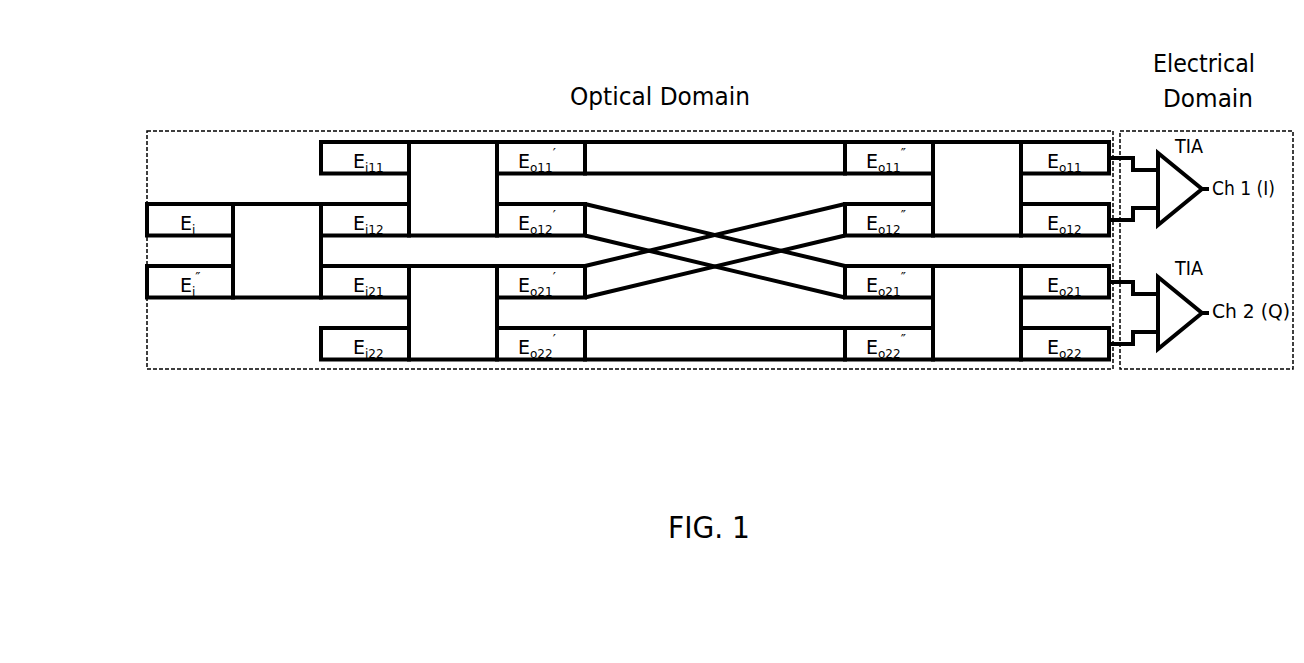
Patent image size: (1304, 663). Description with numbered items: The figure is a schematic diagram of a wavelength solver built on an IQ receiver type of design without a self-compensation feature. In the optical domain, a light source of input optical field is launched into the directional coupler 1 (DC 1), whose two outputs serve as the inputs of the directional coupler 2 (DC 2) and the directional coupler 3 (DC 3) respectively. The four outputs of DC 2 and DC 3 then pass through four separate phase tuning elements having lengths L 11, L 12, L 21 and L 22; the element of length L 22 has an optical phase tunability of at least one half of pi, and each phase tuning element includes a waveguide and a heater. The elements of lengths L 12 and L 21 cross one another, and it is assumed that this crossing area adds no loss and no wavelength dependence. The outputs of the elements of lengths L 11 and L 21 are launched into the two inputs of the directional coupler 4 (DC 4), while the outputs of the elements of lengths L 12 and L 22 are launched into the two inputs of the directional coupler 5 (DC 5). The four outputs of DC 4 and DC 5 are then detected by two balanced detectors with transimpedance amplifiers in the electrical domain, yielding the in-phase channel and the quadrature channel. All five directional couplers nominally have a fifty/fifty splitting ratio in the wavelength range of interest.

The directional coupler 1 is at (277, 251).
The directional coupler 2 is at (453, 189).
The directional coupler 3 is at (453, 313).
The directional coupler 4 is at (977, 189).
The directional coupler 5 is at (977, 313).
The phase tuning element length 11 is at (715, 158).
The phase tuning element length 12 is at (715, 251).
The phase tuning element length 21 is at (715, 251).
The phase tuning element length 22 is at (715, 344).